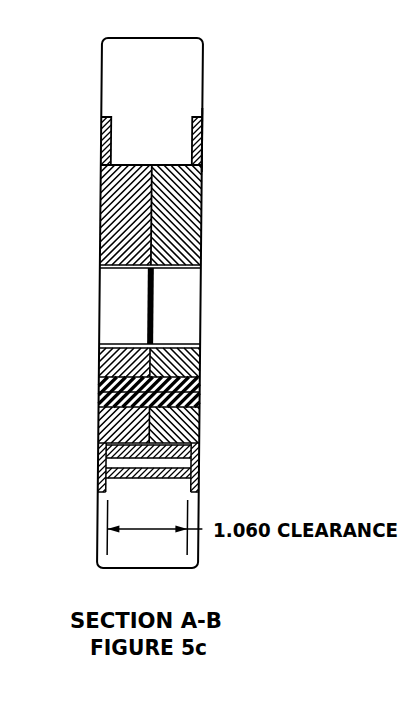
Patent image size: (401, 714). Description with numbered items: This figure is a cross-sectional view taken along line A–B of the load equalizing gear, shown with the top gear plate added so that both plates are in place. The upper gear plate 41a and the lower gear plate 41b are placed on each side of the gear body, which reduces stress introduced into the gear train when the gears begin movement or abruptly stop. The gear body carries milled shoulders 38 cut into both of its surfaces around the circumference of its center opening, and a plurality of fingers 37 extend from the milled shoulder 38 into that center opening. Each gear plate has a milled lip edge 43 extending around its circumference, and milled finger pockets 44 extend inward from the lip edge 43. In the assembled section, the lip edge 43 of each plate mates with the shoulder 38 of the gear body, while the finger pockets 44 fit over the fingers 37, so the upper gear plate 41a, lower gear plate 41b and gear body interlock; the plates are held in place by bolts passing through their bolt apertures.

The milled finger pocket 44 is at (116, 137).
The milled shoulder 38 is at (189, 131).
The milled lip edge 43 is at (210, 137).
The finger 37 is at (154, 131).
The upper gear plate 41a is at (85, 235).
The lower gear plate 41b is at (210, 265).